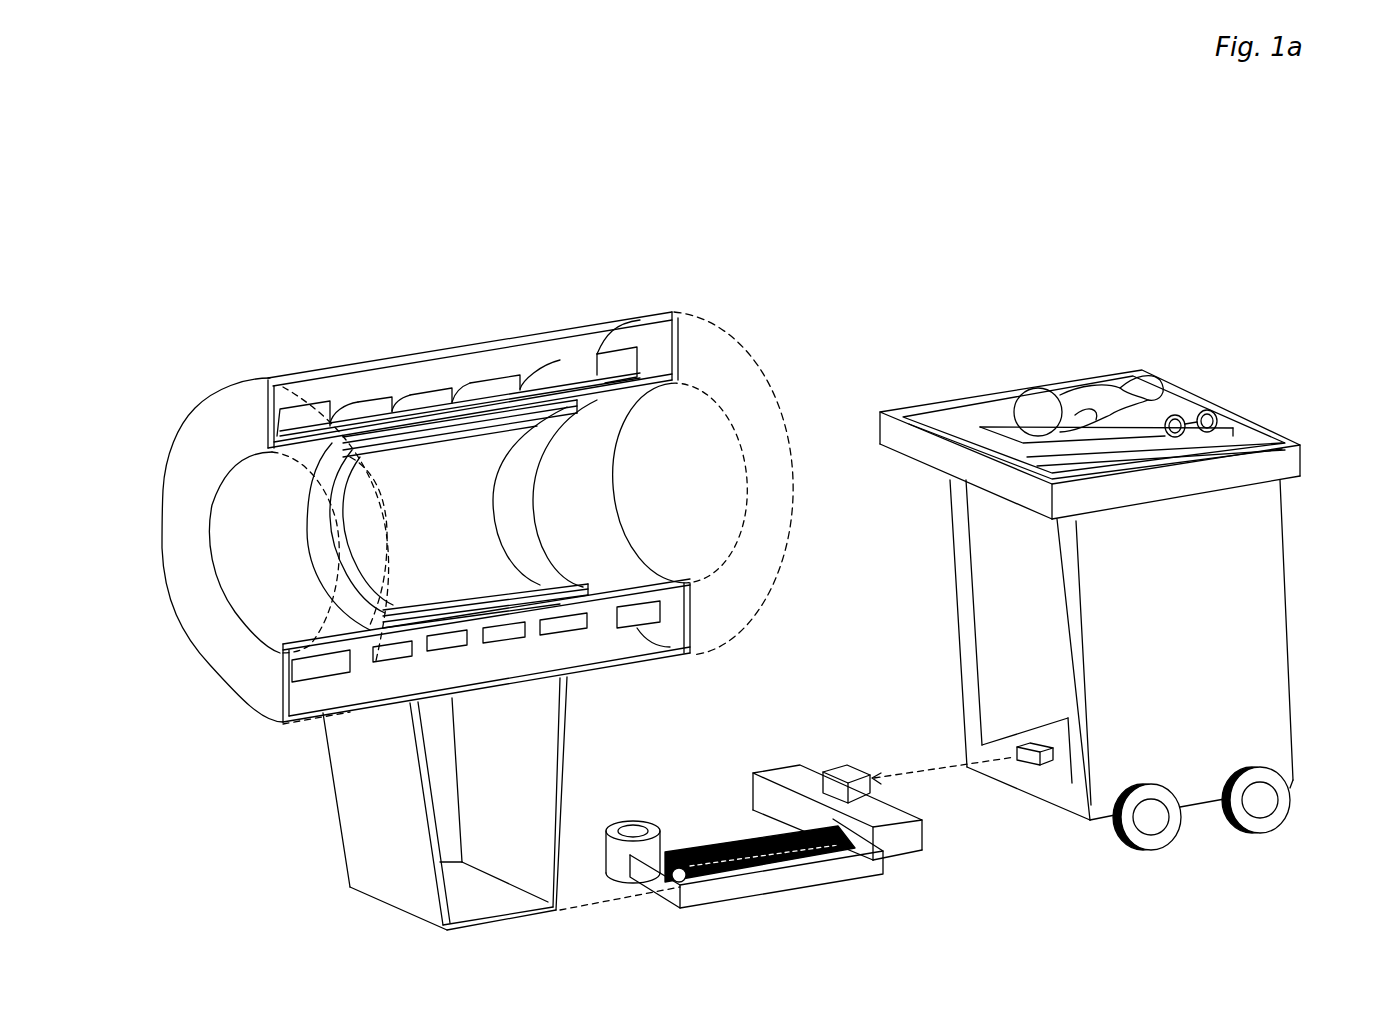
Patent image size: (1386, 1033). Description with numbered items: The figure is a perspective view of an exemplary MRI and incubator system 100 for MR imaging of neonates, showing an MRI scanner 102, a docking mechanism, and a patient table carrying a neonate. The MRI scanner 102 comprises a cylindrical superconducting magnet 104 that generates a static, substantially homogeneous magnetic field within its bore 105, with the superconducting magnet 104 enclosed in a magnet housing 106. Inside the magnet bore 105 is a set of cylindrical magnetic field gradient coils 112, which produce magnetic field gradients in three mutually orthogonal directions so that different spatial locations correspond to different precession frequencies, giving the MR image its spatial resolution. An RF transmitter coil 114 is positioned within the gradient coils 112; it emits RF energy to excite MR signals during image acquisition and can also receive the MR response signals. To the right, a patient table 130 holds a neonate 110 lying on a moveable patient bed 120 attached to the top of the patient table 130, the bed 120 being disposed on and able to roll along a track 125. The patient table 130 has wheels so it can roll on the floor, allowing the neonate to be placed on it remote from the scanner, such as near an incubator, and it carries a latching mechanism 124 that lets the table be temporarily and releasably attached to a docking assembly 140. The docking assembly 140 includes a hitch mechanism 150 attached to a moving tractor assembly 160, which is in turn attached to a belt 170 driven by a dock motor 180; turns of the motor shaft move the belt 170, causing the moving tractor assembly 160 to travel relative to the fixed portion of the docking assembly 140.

The MRI and incubator system 100 is at (810, 176).
The MRI scanner 102 is at (763, 388).
The cylindrical superconducting magnet 104 is at (480, 382).
The magnet bore 105 is at (258, 617).
The magnet housing 106 is at (545, 325).
The neonate 110 is at (1070, 393).
The cylindrical magnetic field gradient coils 112 is at (587, 588).
The RF transmitter coil 114 is at (493, 483).
The moveable patient bed 120 is at (1163, 412).
The latching mechanism 124 is at (1017, 745).
The track 125 is at (1233, 428).
The patient table 130 is at (1242, 642).
The docking assembly 140 is at (855, 868).
The hitch mechanism 150 is at (845, 773).
The moving tractor assembly 160 is at (903, 837).
The belt 170 is at (777, 843).
The dock motor 180 is at (610, 823).